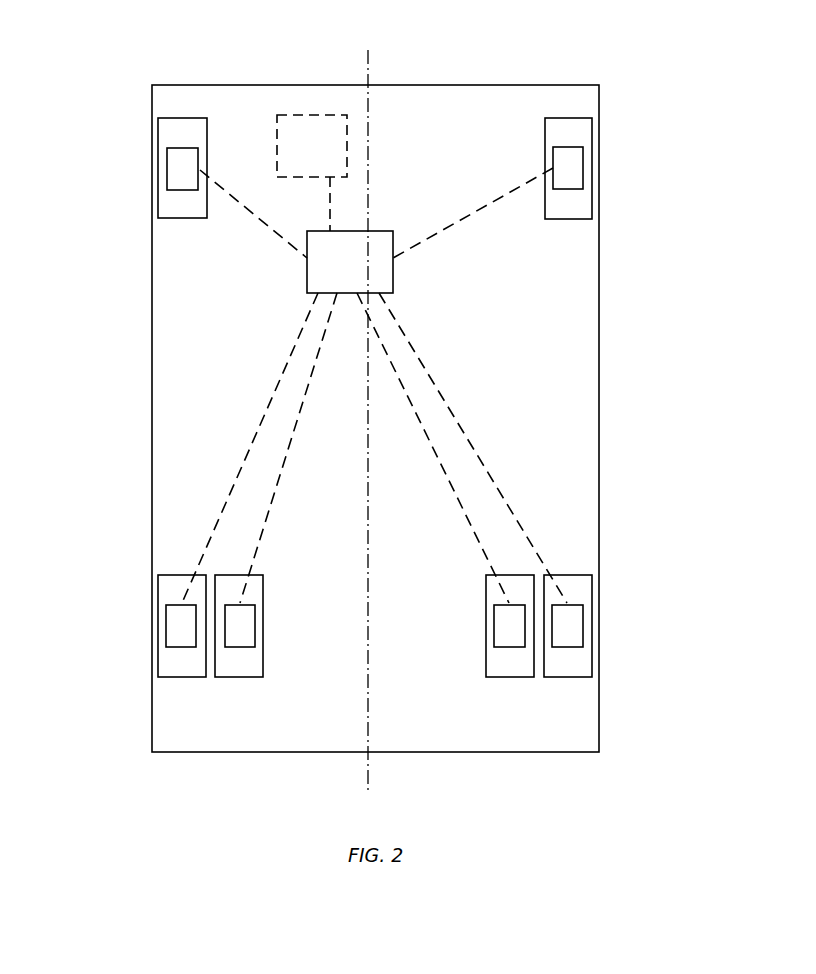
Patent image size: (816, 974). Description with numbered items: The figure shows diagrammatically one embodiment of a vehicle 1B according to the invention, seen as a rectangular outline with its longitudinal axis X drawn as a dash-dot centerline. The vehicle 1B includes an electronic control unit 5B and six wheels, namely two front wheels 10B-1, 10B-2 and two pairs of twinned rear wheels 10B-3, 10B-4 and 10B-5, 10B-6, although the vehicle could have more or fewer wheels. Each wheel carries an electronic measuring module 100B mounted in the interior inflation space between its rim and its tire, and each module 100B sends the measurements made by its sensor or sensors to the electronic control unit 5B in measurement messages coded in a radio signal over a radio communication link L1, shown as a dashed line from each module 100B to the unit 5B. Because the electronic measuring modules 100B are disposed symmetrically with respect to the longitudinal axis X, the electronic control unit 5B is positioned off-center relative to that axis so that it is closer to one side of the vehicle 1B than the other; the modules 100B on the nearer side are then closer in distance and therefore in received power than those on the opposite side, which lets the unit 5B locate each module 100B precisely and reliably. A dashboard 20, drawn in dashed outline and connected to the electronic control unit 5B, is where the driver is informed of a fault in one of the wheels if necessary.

The vehicle 1B is at (430, 85).
The wheel 10B-1 is at (160, 135).
The wheel 10B-2 is at (592, 134).
The wheel 10B-3 is at (160, 590).
The wheel 10B-4 is at (227, 677).
The wheel 10B-5 is at (500, 677).
The wheel 10B-6 is at (592, 592).
The electronic measuring module 100B is at (167, 168).
The dashboard 20 is at (312, 173).
The electronic control unit 5B is at (350, 262).
The radio communication link L1 is at (374, 385).
The longitudinal axis X is at (367, 418).